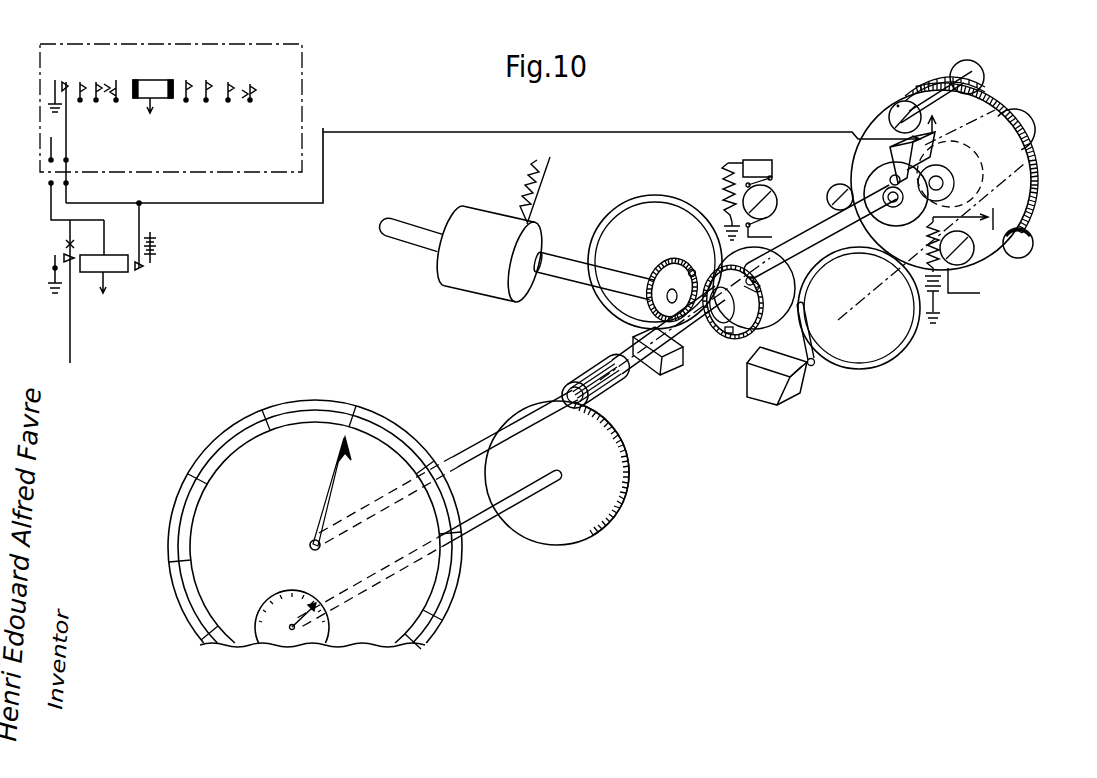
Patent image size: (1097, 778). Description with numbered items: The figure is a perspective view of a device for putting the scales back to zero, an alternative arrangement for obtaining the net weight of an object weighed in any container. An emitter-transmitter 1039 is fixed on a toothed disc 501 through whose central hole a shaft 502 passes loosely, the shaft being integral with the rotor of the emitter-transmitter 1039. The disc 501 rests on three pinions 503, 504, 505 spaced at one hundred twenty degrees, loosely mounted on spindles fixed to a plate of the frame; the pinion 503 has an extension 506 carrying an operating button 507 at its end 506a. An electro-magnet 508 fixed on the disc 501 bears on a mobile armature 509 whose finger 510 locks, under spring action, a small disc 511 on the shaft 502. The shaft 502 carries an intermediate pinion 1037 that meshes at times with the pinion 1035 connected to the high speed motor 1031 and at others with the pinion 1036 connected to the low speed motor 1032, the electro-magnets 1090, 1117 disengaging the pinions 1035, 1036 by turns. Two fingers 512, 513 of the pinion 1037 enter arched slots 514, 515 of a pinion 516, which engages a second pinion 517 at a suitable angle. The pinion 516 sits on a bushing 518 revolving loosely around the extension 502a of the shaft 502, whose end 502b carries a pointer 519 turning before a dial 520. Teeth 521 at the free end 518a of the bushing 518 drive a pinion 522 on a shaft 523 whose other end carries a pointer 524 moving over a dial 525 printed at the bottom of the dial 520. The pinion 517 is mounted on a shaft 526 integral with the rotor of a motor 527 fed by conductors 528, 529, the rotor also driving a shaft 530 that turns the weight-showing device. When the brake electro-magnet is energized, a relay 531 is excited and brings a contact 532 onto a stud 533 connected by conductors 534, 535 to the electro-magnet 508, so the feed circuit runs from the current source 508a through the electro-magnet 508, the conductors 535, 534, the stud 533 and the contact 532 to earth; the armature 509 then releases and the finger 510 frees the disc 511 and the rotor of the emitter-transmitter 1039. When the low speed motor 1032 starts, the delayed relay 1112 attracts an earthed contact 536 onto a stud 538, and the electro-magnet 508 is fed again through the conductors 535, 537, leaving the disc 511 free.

The disc 501 is at (1017, 176).
The shaft 502 is at (838, 240).
The extension of the shaft 502a is at (488, 438).
The end of the shaft extension 502b is at (321, 548).
The pinion 503 is at (980, 74).
The pinion 504 is at (838, 187).
The pinion 505 is at (1034, 241).
The extension 506 is at (950, 76).
The end of the extension 506a is at (923, 95).
The operating button 507 is at (898, 106).
The electro-magnet 508 is at (920, 137).
The current source 508a is at (948, 118).
The mobile armature 509 is at (858, 140).
The finger 510 is at (891, 178).
The small disc 511 is at (899, 227).
The finger 512 is at (765, 252).
The finger 513 is at (723, 325).
The arched slot 514 is at (748, 330).
The arched slot 515 is at (712, 340).
The pinion 516 is at (801, 302).
The pinion 517 is at (622, 307).
The bushing 518 is at (628, 344).
The free end of the bushing 518a is at (612, 393).
The pointer 519 is at (337, 490).
The dial 520 is at (310, 472).
The teeth 521 is at (588, 378).
The pinion 522 is at (605, 437).
The shaft 523 is at (471, 528).
The pointer 524 is at (297, 620).
The dial 525 is at (330, 627).
The shaft 526 is at (565, 246).
The motor 527 is at (474, 207).
The conductor 528 is at (537, 160).
The conductor 529 is at (551, 157).
The shaft 530 is at (412, 222).
The relay 531 is at (118, 272).
The contact 532 is at (153, 258).
The stud 533 is at (142, 270).
The conductor 534 is at (141, 218).
The conductor 535 is at (408, 131).
The contact 536 is at (53, 92).
The conductor 537 is at (108, 191).
The stud 538 is at (68, 82).
The motor revolving at high speed 1031 is at (950, 270).
The motor revolving at low speed 1032 is at (770, 176).
The pinion 1035 is at (848, 368).
The pinion 1036 is at (640, 192).
The intermediate pinion 1037 is at (762, 235).
The emitter-transmitter 1039 is at (1027, 124).
The electro-magnet 1090 is at (768, 397).
The delayed relay 1112 is at (147, 80).
The electro-magnet 1117 is at (665, 372).